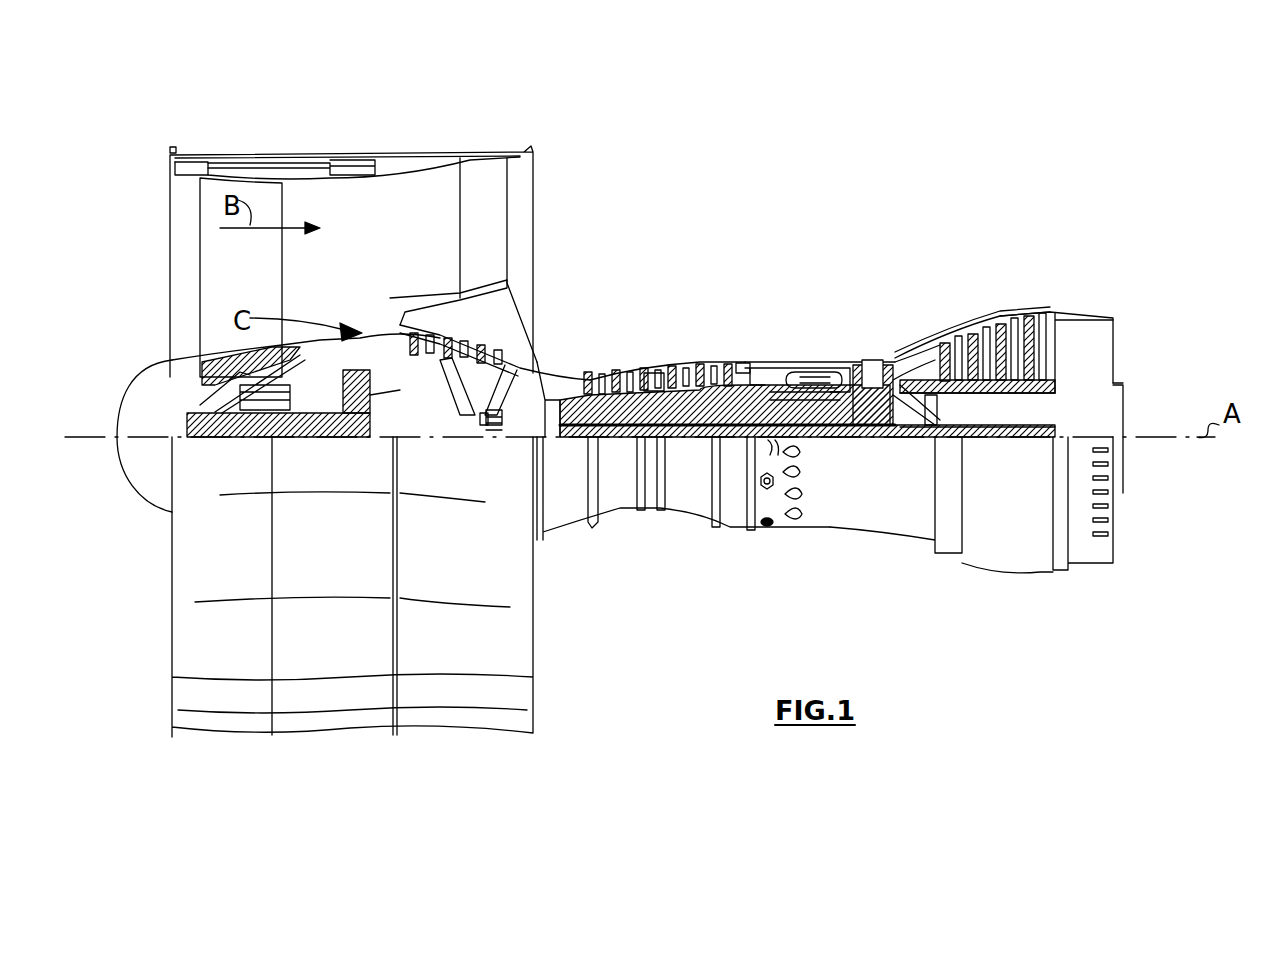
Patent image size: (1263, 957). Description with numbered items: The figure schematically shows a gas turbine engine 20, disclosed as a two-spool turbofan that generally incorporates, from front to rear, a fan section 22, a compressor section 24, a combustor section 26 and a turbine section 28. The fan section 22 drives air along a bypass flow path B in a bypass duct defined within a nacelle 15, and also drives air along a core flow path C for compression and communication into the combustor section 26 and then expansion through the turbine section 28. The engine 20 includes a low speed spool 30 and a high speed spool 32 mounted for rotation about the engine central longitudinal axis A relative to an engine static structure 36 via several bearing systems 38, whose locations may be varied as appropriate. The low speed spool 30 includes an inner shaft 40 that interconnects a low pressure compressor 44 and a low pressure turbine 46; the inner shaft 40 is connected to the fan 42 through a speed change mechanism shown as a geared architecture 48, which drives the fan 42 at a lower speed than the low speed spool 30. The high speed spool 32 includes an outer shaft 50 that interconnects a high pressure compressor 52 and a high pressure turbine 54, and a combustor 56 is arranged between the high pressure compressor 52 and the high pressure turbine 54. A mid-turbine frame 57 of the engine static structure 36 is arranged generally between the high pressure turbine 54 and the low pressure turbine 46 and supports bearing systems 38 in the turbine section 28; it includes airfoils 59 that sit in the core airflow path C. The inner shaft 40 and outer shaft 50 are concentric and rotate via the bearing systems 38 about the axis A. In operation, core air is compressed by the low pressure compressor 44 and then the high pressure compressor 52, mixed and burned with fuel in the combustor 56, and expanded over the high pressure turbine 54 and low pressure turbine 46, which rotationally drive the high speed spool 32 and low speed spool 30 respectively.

The nacelle 15 is at (350, 160).
The gas turbine engine 20 is at (820, 200).
The fan section 22 is at (280, 140).
The compressor section 24 is at (583, 345).
The combustor section 26 is at (805, 335).
The turbine section 28 is at (950, 297).
The low speed spool 30 is at (690, 445).
The high speed spool 32 is at (740, 368).
The engine static structure 36 is at (730, 525).
The bearing systems 38 is at (490, 420).
The inner shaft 40 is at (552, 440).
The fan 42 is at (255, 285).
The low pressure compressor 44 is at (460, 360).
The low pressure turbine 46 is at (1000, 318).
The geared architecture 48 is at (358, 420).
The outer shaft 50 is at (815, 430).
The high pressure compressor 52 is at (650, 375).
The high pressure turbine 54 is at (873, 360).
The combustor 56 is at (810, 380).
The mid-turbine frame 57 is at (912, 350).
The airfoils 59 is at (940, 400).